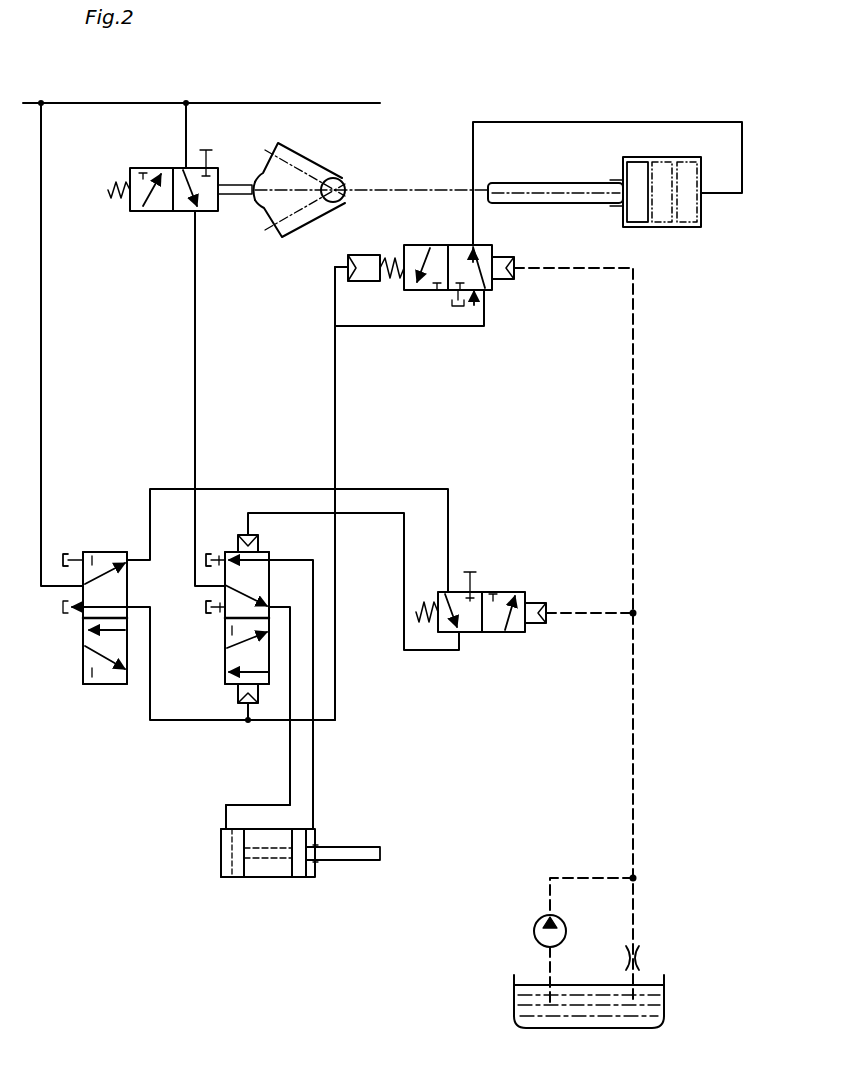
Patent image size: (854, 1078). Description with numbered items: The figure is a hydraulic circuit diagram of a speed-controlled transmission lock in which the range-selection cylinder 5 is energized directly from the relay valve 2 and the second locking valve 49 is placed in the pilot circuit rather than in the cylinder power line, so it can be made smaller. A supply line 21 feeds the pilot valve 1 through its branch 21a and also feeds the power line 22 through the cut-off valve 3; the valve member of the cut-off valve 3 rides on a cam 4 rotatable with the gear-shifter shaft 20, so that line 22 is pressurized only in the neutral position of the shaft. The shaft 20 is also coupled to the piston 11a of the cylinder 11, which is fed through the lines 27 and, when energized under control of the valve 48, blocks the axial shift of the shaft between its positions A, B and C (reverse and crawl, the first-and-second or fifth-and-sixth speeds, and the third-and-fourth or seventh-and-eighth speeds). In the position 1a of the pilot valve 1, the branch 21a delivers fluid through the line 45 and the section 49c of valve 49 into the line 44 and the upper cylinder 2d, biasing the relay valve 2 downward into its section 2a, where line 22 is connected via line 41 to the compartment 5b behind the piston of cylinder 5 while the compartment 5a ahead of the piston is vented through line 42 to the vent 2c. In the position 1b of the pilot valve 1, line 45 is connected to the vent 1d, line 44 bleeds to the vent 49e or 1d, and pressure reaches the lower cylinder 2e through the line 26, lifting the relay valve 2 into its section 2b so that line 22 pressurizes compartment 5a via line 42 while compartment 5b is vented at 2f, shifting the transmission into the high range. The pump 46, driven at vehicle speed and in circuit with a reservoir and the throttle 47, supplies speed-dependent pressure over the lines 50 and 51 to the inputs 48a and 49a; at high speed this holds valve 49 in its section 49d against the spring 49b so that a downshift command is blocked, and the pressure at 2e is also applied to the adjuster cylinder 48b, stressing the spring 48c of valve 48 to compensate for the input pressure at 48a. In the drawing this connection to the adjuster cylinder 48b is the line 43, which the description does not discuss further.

The supply line 21 is at (256, 101).
The supply line branch 21a is at (43, 372).
The power line 22 is at (193, 372).
The cut-off valve 3 is at (142, 198).
The cam 4 is at (320, 177).
The lines 27 is at (603, 120).
The gear-shifter shaft 20 is at (530, 184).
The cylinder 11 is at (691, 229).
The piston 11a is at (640, 212).
The shaft position C is at (641, 160).
The shaft position B is at (667, 160).
The shaft position A is at (692, 160).
The valve 48 is at (475, 308).
The input 48a is at (503, 276).
The adjuster cylinder 48b is at (362, 270).
The spring 48c is at (395, 270).
The line 43 is at (338, 449).
The line 45 is at (260, 488).
The line 44 is at (408, 534).
The pilot valve 1 is at (90, 644).
The first position of pilot valve 1a is at (128, 584).
The second position of pilot valve 1b is at (107, 686).
The vent 1d is at (72, 551).
The relay valve 2 is at (228, 636).
The first position of relay valve 2a is at (270, 584).
The second position of relay valve 2b is at (228, 666).
The vent 2c is at (218, 553).
The upper cylinder 2d is at (260, 542).
The lower cylinder 2e is at (240, 700).
The vent 2f is at (212, 612).
The line 26 is at (180, 722).
The line 41 is at (287, 782).
The line 42 is at (316, 782).
The range-selection cylinder 5 is at (280, 878).
The compartment 5a is at (310, 878).
The compartment 5b is at (226, 878).
The locking valve 49 is at (496, 622).
The input 49a is at (531, 624).
The spring 49b is at (427, 626).
The position of locking valve 49c is at (472, 634).
The position of locking valve 49d is at (515, 634).
The vent 49e is at (474, 585).
The line 50 is at (637, 565).
The line 51 is at (578, 611).
The pump 46 is at (540, 935).
The throttle 47 is at (638, 958).